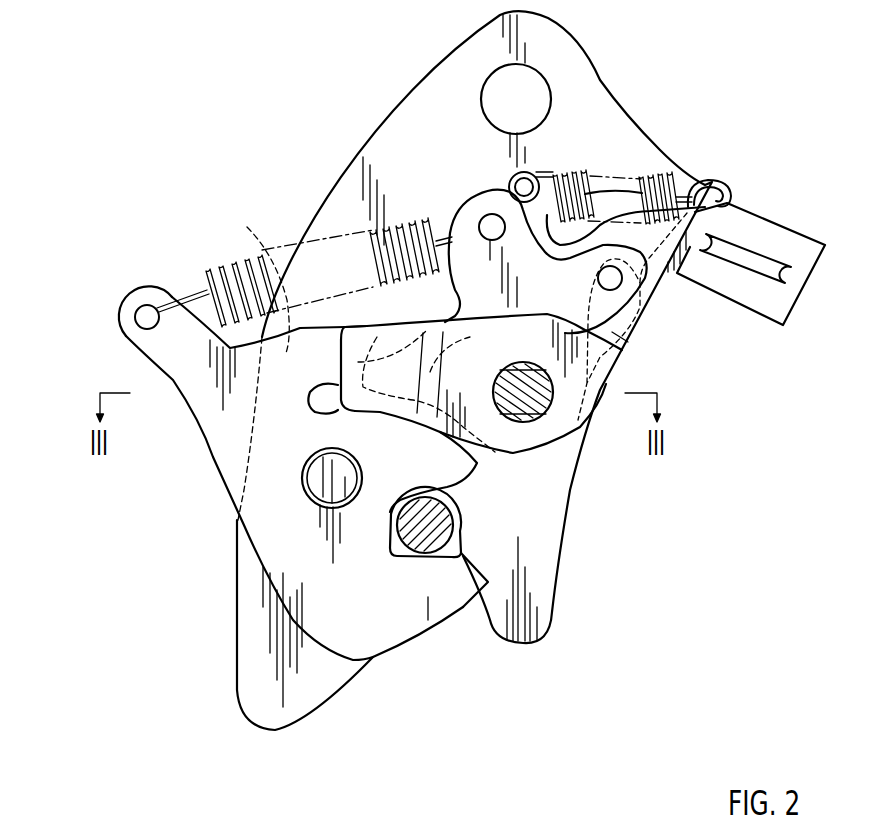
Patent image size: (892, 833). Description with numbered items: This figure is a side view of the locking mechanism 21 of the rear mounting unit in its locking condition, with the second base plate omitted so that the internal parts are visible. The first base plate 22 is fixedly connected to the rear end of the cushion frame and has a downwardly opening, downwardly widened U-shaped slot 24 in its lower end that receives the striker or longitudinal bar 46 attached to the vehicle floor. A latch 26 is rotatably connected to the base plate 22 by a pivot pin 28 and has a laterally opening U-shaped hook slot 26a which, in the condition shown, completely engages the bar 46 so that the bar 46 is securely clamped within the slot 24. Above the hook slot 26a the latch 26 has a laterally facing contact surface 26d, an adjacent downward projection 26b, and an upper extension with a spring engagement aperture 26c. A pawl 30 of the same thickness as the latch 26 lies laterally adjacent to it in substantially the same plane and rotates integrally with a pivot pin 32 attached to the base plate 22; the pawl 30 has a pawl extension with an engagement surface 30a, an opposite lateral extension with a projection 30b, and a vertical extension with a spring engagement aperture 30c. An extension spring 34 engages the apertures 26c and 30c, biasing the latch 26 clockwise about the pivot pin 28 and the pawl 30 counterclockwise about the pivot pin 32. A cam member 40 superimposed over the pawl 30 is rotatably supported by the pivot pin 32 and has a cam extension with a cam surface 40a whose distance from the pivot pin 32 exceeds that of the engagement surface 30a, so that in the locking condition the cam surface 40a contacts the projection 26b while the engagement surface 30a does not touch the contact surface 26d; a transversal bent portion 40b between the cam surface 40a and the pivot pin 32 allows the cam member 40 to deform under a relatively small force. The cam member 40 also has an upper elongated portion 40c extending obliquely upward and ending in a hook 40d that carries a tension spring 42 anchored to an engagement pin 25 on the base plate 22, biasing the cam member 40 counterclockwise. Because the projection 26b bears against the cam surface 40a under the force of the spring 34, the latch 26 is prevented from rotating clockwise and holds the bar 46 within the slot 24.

The locking mechanism 21 is at (184, 101).
The first base plate 22 is at (408, 122).
The U-shaped slot 24 is at (462, 600).
The engagement pin 25 is at (530, 183).
The latch 26 is at (290, 553).
The U-shaped hook slot 26a is at (387, 520).
The projection 26b is at (310, 395).
The spring engagement aperture 26c is at (143, 315).
The contact surface 26d is at (243, 278).
The pivot pin 28 is at (345, 473).
The pawl 30 is at (553, 282).
The engagement surface 30a is at (358, 360).
The projection 30b is at (613, 281).
The spring engagement aperture 30c is at (485, 215).
The pivot pin 32 is at (540, 412).
The extension spring 34 is at (212, 270).
The cam member 40 is at (525, 442).
The cam surface 40a is at (345, 355).
The bent portion 40b is at (430, 369).
The upper elongated portion 40c is at (626, 327).
The hook 40d is at (735, 200).
The tension spring 42 is at (657, 174).
The bar 46 is at (417, 557).